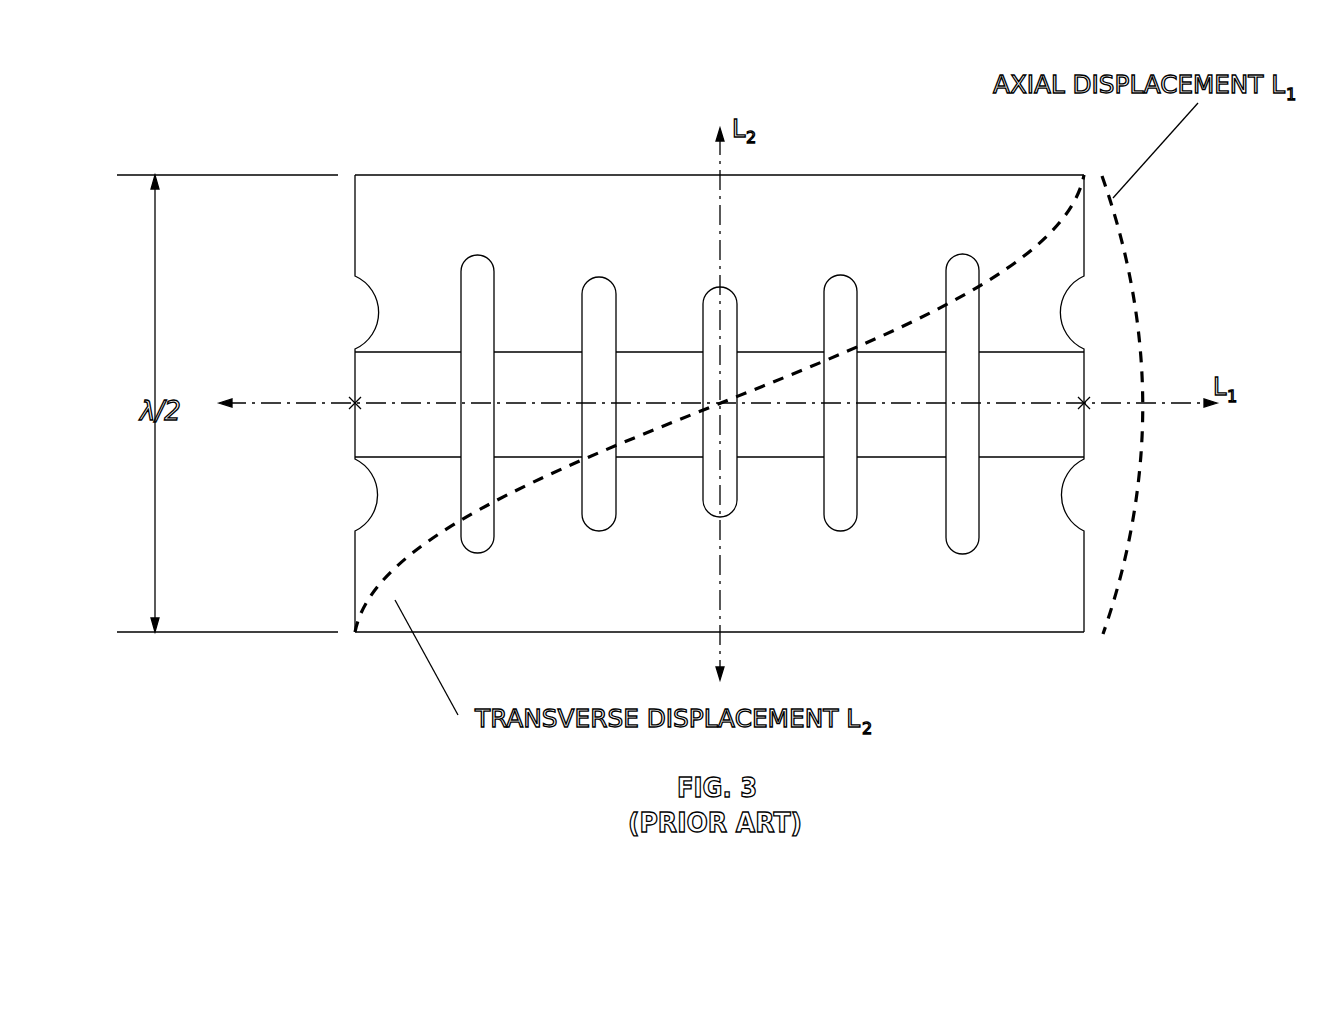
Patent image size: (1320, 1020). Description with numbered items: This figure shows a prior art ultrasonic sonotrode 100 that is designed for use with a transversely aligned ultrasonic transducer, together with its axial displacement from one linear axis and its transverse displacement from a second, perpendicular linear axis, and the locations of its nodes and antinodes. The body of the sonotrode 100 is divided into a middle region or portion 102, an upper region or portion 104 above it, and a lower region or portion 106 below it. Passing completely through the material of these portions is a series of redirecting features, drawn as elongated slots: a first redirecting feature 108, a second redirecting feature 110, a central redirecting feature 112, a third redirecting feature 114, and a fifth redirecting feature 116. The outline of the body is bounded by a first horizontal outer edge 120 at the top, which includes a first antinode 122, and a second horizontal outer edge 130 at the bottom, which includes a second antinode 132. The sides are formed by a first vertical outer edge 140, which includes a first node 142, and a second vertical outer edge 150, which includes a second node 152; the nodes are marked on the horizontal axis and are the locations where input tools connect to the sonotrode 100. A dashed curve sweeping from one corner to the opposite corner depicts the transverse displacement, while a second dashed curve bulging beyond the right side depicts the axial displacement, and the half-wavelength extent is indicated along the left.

The ultrasonic sonotrode 100 is at (852, 126).
The middle region or portion 102 is at (432, 389).
The upper region or portion 104 is at (610, 219).
The lower region or portion 106 is at (572, 589).
The first redirecting feature 108 is at (468, 255).
The second redirecting feature 110 is at (592, 276).
The slot 112 is at (738, 291).
The third redirecting feature 114 is at (857, 282).
The fifth redirecting feature 116 is at (970, 253).
The first horizontal outer edge 120 is at (410, 172).
The first antinode 122 is at (603, 165).
The second horizontal outer edge 130 is at (553, 635).
The second antinode 132 is at (852, 645).
The first vertical outer edge 140 is at (355, 273).
The first node 142 is at (349, 409).
The second vertical outer edge 150 is at (1088, 595).
The second node 152 is at (1088, 410).